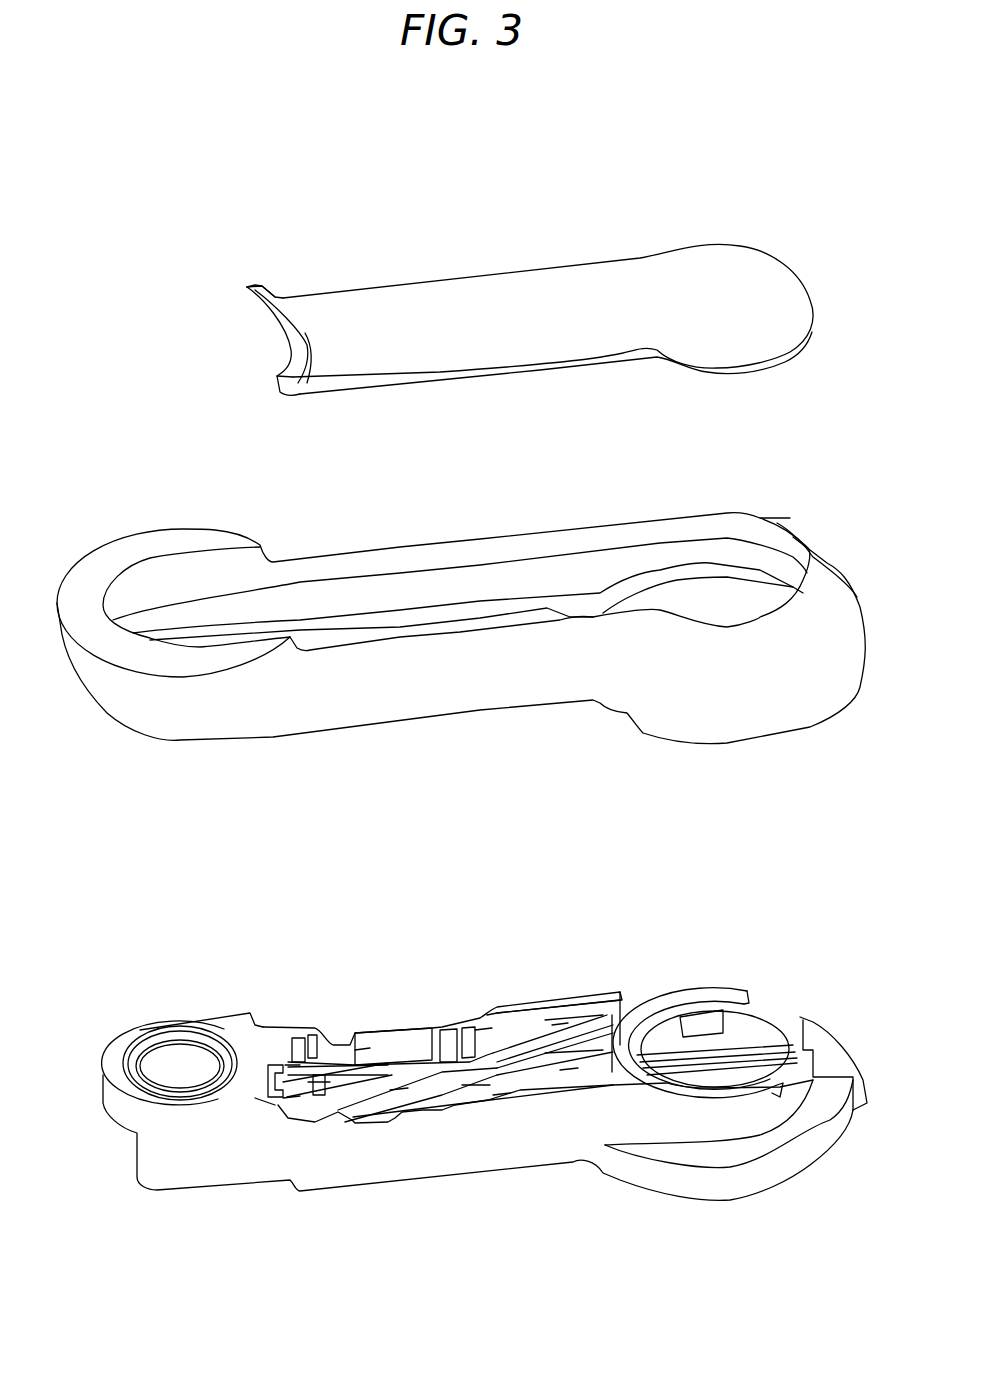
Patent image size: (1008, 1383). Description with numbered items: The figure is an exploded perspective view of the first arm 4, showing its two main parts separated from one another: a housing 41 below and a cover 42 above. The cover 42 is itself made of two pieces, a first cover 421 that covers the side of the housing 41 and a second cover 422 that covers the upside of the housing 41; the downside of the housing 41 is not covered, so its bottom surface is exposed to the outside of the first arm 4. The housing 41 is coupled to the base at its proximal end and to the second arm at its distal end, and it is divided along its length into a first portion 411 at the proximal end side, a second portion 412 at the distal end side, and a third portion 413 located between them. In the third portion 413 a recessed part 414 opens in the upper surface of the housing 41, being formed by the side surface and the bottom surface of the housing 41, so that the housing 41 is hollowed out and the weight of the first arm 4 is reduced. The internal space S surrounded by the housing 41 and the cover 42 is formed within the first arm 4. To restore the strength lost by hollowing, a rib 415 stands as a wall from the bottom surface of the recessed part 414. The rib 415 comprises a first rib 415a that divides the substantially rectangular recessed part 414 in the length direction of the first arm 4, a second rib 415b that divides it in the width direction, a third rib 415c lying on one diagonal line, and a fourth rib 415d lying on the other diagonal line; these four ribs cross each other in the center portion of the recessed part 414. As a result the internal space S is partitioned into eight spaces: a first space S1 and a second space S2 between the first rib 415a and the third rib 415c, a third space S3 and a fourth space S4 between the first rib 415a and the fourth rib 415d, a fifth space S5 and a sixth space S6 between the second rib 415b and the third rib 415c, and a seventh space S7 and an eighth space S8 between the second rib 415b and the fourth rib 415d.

The first arm 4 is at (811, 141).
The cover 42 is at (317, 203).
The first cover 421 is at (158, 545).
The second cover 422 is at (337, 317).
The housing 41 is at (731, 975).
The first portion 411 is at (783, 1148).
The second portion 412 is at (183, 1070).
The third portion 413 is at (430, 1155).
The recessed part 414 is at (520, 1030).
The rib 415 is at (402, 1056).
The first rib 415a is at (433, 1040).
The second rib 415b is at (590, 1010).
The third rib 415c is at (312, 1035).
The fourth rib 415d is at (343, 1115).
The internal space S is at (480, 1104).
The first space S1 is at (367, 1050).
The second space S2 is at (500, 1103).
The third space S3 is at (398, 1093).
The fourth space S4 is at (482, 1030).
The fifth space S5 is at (292, 1065).
The sixth space S6 is at (567, 1073).
The seventh space S7 is at (291, 1100).
The eighth space S8 is at (560, 1025).